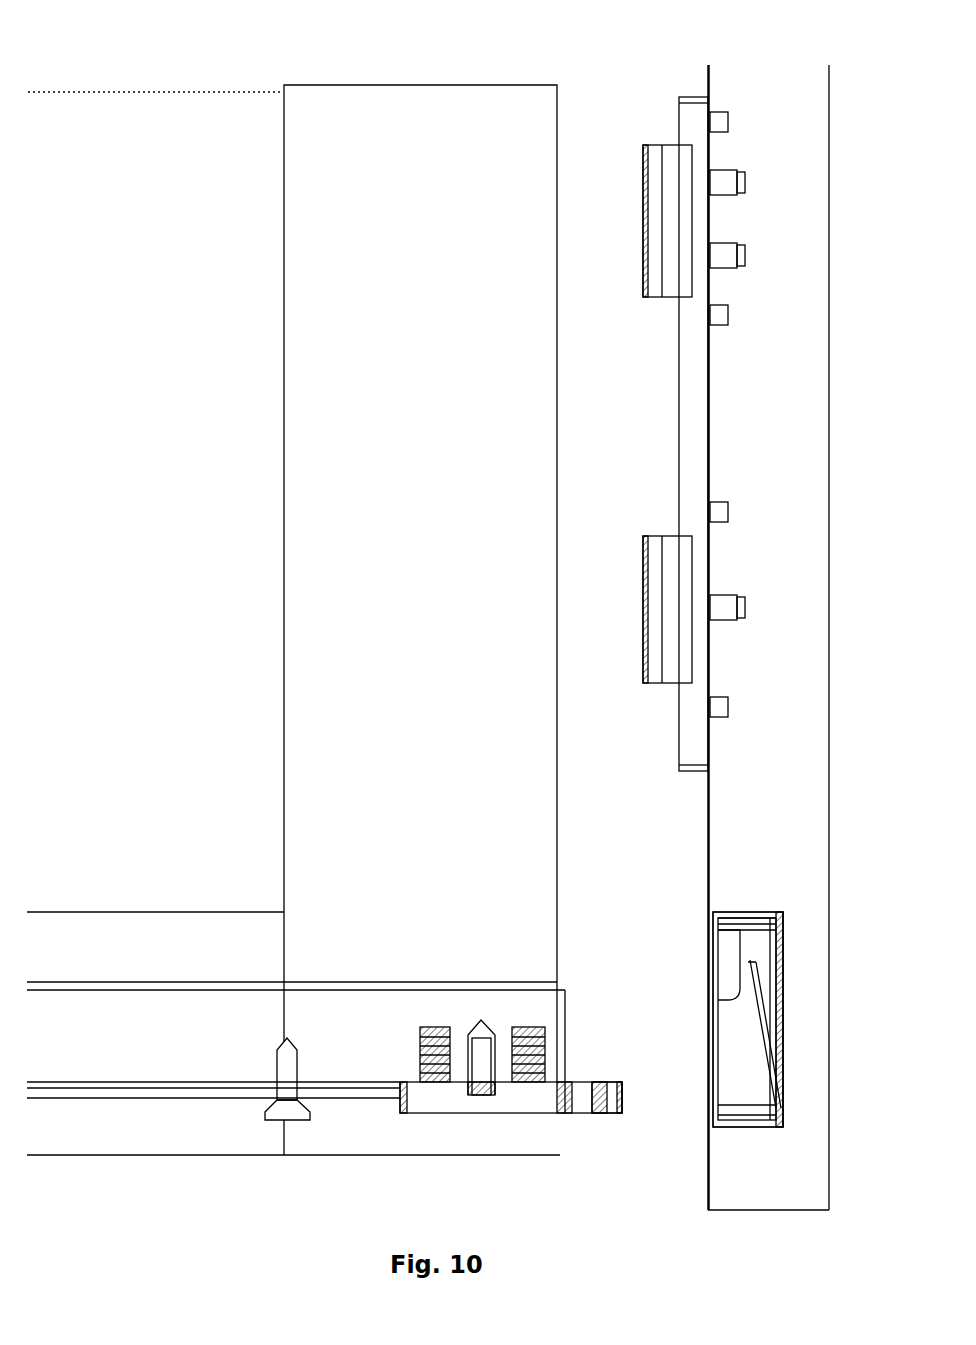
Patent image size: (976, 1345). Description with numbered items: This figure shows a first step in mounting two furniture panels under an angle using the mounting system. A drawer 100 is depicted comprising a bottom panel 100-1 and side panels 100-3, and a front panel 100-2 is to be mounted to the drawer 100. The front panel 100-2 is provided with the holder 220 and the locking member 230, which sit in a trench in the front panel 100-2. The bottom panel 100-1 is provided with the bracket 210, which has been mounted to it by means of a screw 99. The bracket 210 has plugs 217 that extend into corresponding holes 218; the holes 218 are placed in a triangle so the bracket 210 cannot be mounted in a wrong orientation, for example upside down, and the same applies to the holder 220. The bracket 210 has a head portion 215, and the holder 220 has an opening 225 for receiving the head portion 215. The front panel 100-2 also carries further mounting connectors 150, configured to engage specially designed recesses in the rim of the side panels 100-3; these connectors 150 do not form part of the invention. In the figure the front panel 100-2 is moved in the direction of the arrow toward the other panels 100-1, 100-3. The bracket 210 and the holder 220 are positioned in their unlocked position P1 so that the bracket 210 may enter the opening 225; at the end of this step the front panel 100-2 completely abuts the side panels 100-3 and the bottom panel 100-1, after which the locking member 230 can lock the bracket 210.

The drawer 100 is at (128, 79).
The bottom panel 100-1 is at (167, 1050).
The front panel 100-2 is at (796, 410).
The side panels 100-3 is at (152, 505).
The further mounting connectors 150 is at (675, 255).
The bracket 210 is at (540, 1095).
The head portion 215 is at (612, 1093).
The plugs 217 is at (436, 1050).
The holes 218 is at (527, 1035).
The screw 99 is at (487, 1085).
The holder 220 is at (702, 965).
The locking member 230 is at (697, 1014).
The opening 225 is at (748, 1058).
The unlocked position P1 is at (690, 1055).